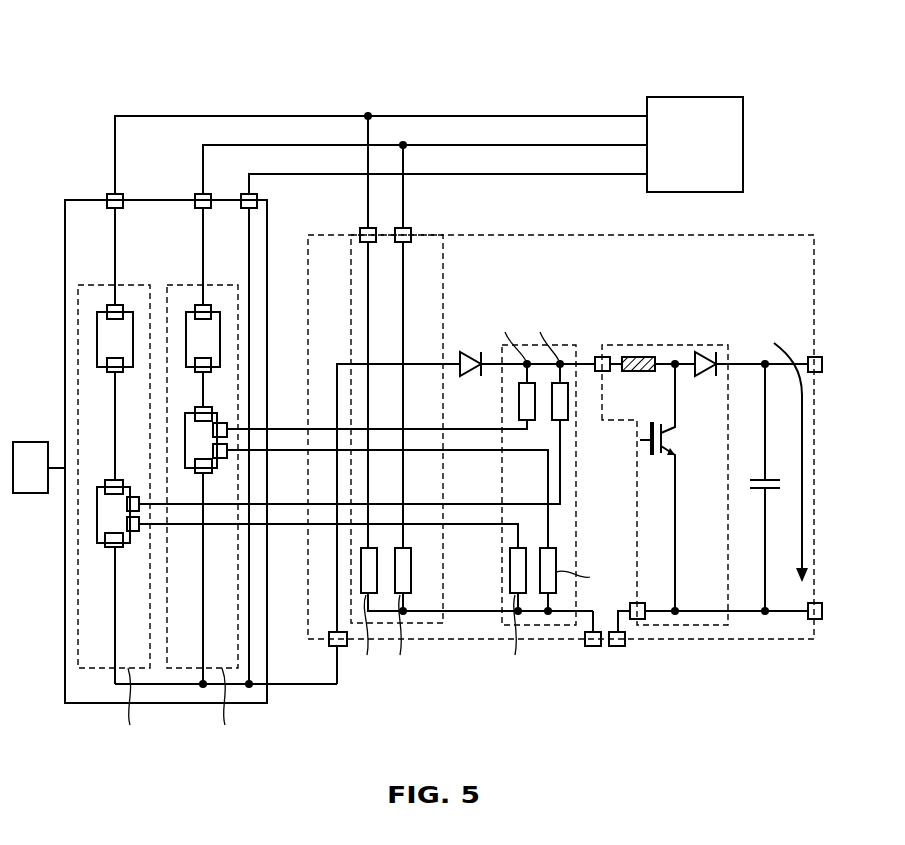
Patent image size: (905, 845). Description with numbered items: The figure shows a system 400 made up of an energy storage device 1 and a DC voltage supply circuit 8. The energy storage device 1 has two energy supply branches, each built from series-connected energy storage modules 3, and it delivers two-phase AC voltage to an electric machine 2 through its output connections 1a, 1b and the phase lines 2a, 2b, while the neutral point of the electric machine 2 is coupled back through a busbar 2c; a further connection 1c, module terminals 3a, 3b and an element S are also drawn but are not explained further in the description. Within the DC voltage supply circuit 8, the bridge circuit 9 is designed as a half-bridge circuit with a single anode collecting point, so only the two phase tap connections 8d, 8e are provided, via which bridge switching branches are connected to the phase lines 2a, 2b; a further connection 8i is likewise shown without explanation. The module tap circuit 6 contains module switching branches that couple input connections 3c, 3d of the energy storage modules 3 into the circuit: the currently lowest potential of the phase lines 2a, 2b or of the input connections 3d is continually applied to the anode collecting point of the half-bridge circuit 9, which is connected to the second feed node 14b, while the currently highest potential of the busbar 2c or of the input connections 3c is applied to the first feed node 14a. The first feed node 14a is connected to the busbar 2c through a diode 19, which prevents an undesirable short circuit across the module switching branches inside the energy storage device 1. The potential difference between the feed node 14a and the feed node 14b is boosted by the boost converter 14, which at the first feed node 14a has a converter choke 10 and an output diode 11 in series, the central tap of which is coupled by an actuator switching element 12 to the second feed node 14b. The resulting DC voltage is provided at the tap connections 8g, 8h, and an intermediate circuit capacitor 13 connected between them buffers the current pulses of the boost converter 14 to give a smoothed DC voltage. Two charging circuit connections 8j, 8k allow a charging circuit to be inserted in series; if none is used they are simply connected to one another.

The system 400 is at (95, 78).
The energy storage device 1 is at (86, 198).
The output connection 1a is at (116, 194).
The output connection 1b is at (204, 194).
The third terminal 1c is at (247, 210).
The electric machine 2 is at (745, 122).
The phase line 2a is at (210, 115).
The phase line 2b is at (258, 145).
The busbar 2c is at (523, 174).
The energy storage module 3 is at (97, 340).
The switch terminal 3a is at (117, 305).
The switch terminal 3b is at (117, 373).
The input connection 3c is at (135, 497).
The input connection 3d is at (137, 548).
The control unit S is at (30, 442).
The module tap circuit 6 is at (547, 627).
The DC voltage supply circuit 8 is at (781, 235).
The phase tap connection 8d is at (361, 233).
The phase tap connection 8e is at (410, 233).
The tap connection 8g is at (810, 357).
The tap connection 8h is at (815, 620).
The terminal 8i is at (345, 647).
The charging circuit connection 8j is at (593, 648).
The charging circuit connection 8k is at (617, 648).
The half-bridge circuit 9 is at (432, 624).
The converter choke 10 is at (635, 357).
The output diode 11 is at (700, 352).
The actuator switching element 12 is at (668, 440).
The intermediate circuit capacitor 13 is at (752, 495).
The boost converter 14 is at (712, 627).
The first feed node 14a is at (600, 355).
The second feed node 14b is at (632, 620).
The diode 19 is at (466, 352).